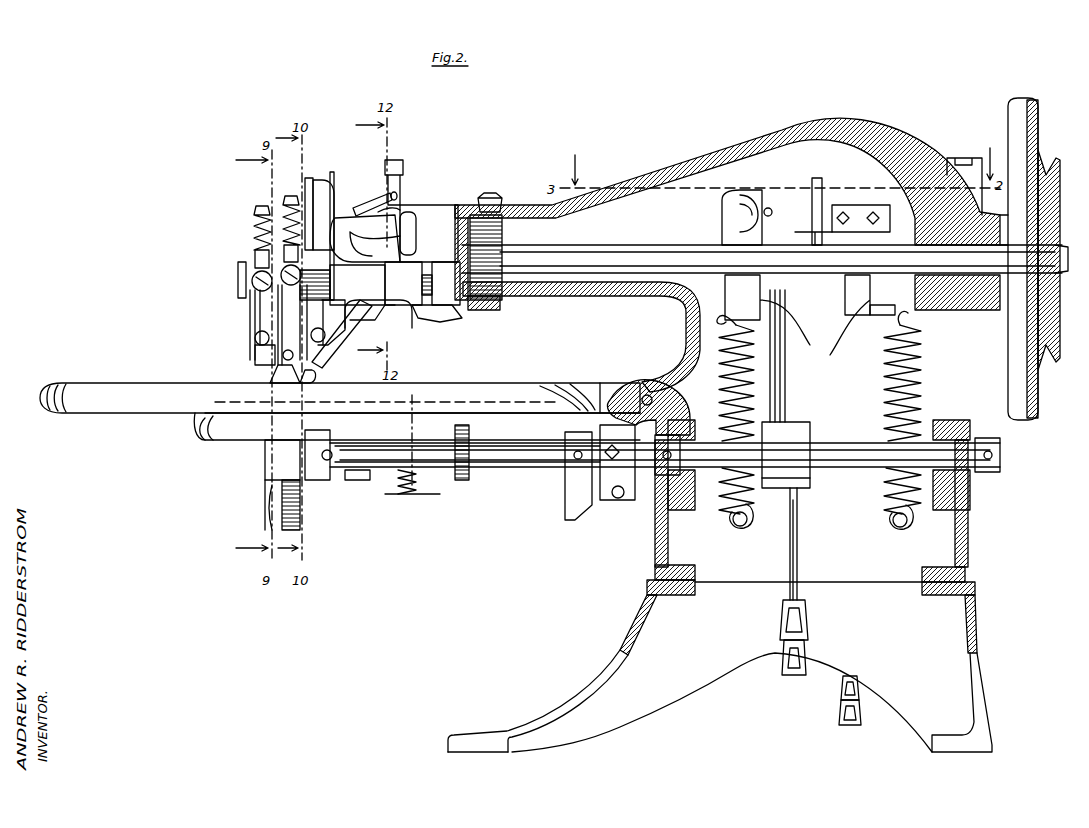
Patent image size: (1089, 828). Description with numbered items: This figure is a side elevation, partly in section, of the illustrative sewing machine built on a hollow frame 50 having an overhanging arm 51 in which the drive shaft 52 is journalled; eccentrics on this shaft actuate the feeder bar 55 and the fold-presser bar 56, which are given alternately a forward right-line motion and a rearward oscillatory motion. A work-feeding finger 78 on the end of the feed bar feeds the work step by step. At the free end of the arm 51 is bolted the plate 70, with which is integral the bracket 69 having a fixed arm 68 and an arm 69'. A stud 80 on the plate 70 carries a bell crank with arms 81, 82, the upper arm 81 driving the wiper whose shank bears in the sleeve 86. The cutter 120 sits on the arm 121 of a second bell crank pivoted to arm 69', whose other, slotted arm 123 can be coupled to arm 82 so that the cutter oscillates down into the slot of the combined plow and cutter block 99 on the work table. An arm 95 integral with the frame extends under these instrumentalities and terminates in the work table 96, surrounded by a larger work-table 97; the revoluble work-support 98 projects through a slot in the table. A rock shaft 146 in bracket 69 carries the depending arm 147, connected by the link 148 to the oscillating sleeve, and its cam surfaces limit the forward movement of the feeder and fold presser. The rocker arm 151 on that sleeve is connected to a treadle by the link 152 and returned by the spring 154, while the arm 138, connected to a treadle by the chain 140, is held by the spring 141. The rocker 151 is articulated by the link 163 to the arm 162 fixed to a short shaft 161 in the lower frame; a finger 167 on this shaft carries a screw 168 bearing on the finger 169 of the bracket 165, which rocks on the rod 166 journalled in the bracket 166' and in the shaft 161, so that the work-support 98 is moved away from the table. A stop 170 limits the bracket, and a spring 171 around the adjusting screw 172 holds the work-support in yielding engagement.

The hollow frame 50 is at (972, 508).
The overhanging arm 51 is at (512, 214).
The drive shaft 52 is at (600, 240).
The feeder bar 55 is at (280, 310).
The fold-presser bar 56 is at (255, 352).
The fixed arm 68 is at (255, 340).
The bracket 69 is at (218, 325).
The arm of the bracket 69' is at (391, 333).
The plate 70 is at (398, 210).
The work-feeding finger 78 is at (275, 378).
The stud 80 is at (400, 218).
The bell crank arm 81 is at (372, 204).
The bell crank arm 82 is at (350, 266).
The sleeve 86 is at (362, 330).
The arm 95 is at (612, 390).
The work table 96 is at (236, 440).
The larger work-table 97 is at (504, 390).
The revoluble work-support 98 is at (282, 470).
The combined plow and cutter block 99 is at (322, 378).
The cutter 120 is at (348, 345).
The arm of cutter bell crank 121 is at (262, 300).
The arm of cutter bell crank 123 is at (317, 236).
The arm 138 is at (856, 312).
The chain 140 is at (850, 728).
The spring 141 is at (884, 397).
The rock shaft 146 is at (429, 233).
The depending arm 147 is at (432, 273).
The link 148 is at (452, 318).
The rocker arm 151 is at (775, 200).
The link 152 is at (800, 555).
The spring 154 is at (732, 500).
The short shaft 161 is at (850, 468).
The arm 162 is at (786, 455).
The link 163 is at (787, 380).
The bracket 165 is at (440, 494).
The rod 166 is at (467, 471).
The bracket 166' is at (337, 470).
The finger 167 is at (640, 500).
The screw 168 is at (612, 500).
The finger 169 is at (580, 512).
The stop 170 is at (464, 482).
The spring 171 is at (395, 480).
The adjusting screw 172 is at (420, 500).